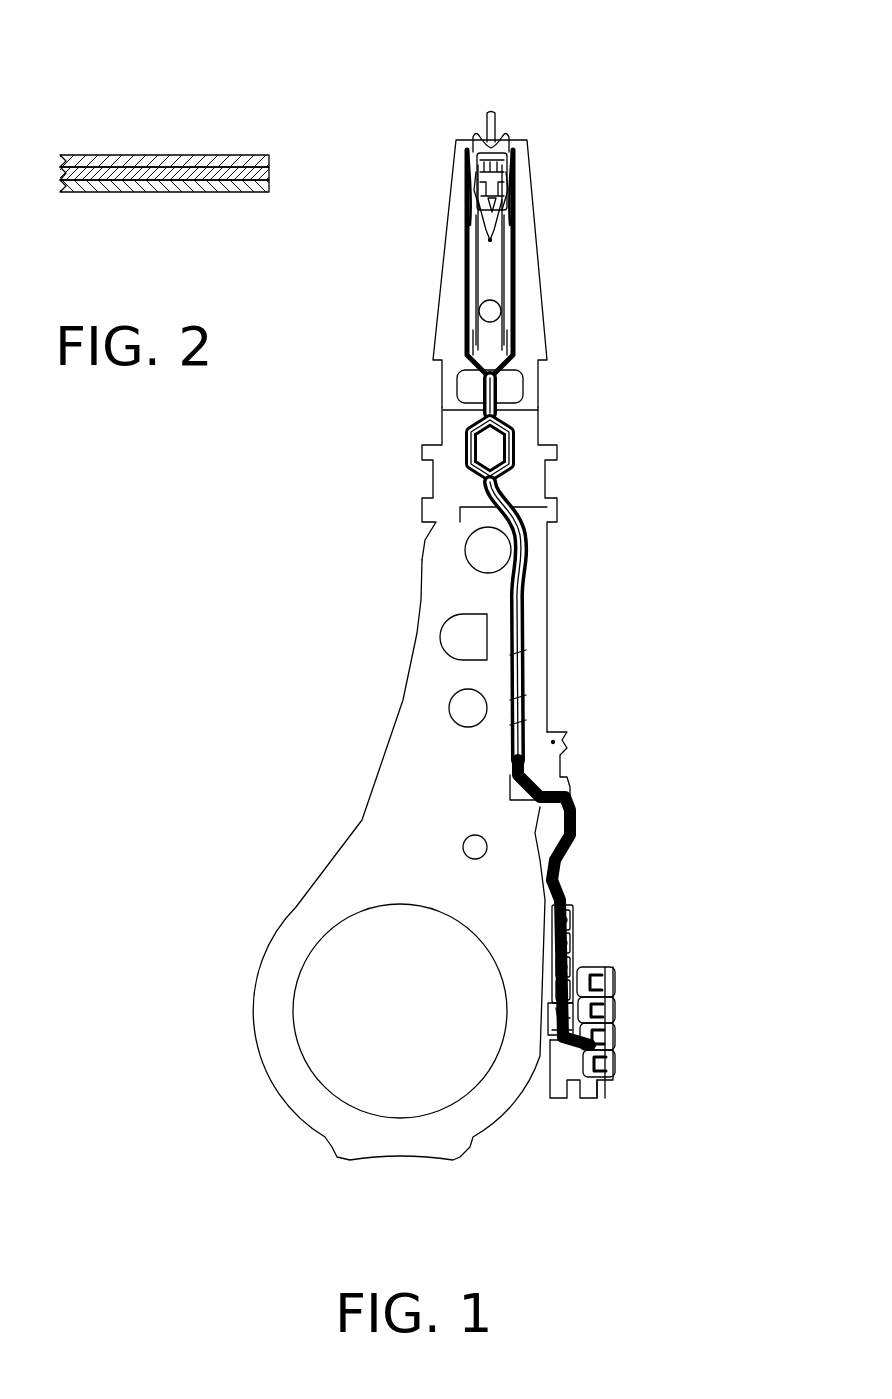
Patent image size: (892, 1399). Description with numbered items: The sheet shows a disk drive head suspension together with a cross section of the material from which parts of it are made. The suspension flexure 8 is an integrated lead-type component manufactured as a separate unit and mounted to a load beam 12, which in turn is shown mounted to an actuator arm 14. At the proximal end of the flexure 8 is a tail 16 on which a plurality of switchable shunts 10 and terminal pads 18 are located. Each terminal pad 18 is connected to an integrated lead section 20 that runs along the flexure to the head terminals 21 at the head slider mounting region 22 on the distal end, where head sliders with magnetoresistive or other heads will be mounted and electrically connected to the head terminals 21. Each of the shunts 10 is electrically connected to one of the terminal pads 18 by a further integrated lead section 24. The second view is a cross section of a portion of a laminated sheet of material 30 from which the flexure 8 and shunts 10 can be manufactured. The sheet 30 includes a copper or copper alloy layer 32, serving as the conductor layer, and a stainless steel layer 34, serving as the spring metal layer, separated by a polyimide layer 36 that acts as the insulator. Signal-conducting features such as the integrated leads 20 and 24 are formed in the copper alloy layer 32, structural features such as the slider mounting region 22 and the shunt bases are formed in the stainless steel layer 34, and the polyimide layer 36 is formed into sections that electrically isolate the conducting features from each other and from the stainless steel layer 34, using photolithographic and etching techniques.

In FIG. 1, the suspension flexure 8 is at (519, 257).
In FIG. 1, the switchable shunts 10 is at (603, 985).
In FIG. 1, the load beam 12 is at (529, 413).
In FIG. 1, the actuator arm 14 is at (443, 675).
In FIG. 1, the tail 16 is at (563, 873).
In FIG. 1, the terminal pads 18 is at (577, 917).
In FIG. 1, the integrated lead section 20 is at (528, 676).
In FIG. 1, the head terminals 21 is at (504, 180).
In FIG. 1, the head slider mounting region 22 is at (504, 183).
In FIG. 1, the integrated lead section 24 is at (557, 1070).
In FIG. 2, the laminated sheet of material 30 is at (154, 145).
In FIG. 2, the copper alloy layer 32 is at (88, 158).
In FIG. 2, the stainless steel layer 34 is at (222, 187).
In FIG. 2, the polyimide layer 36 is at (72, 172).